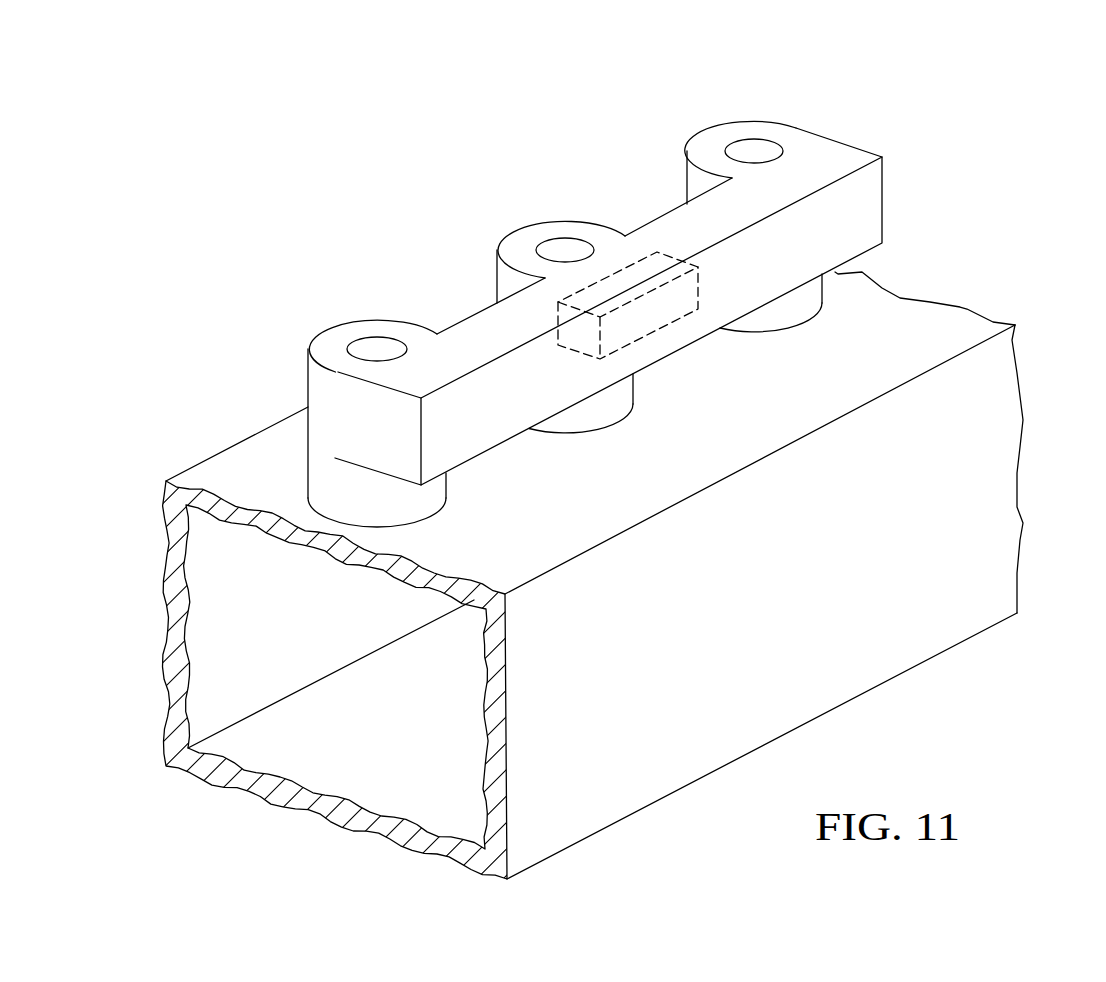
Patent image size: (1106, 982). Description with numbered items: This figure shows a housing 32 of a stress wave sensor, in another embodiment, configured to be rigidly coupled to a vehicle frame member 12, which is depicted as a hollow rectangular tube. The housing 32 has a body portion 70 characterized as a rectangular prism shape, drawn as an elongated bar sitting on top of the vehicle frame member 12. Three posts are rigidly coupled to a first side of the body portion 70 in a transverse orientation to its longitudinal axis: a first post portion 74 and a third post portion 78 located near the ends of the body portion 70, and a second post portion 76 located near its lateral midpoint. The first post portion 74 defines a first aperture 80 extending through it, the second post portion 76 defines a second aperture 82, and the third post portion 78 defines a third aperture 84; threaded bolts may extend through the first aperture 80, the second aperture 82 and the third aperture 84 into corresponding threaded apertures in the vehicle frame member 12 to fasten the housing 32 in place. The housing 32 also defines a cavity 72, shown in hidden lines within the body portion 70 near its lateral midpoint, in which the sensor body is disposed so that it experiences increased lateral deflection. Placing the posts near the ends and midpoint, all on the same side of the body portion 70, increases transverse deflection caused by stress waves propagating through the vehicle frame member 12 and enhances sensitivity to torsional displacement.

The vehicle frame member 12 is at (1012, 377).
The housing 32 is at (617, 286).
The body portion 70 is at (672, 218).
The cavity 72 is at (645, 272).
The first post portion 74 is at (388, 327).
The second post portion 76 is at (578, 224).
The third post portion 78 is at (765, 128).
The first aperture 80 is at (362, 360).
The second aperture 82 is at (550, 258).
The third aperture 84 is at (742, 162).